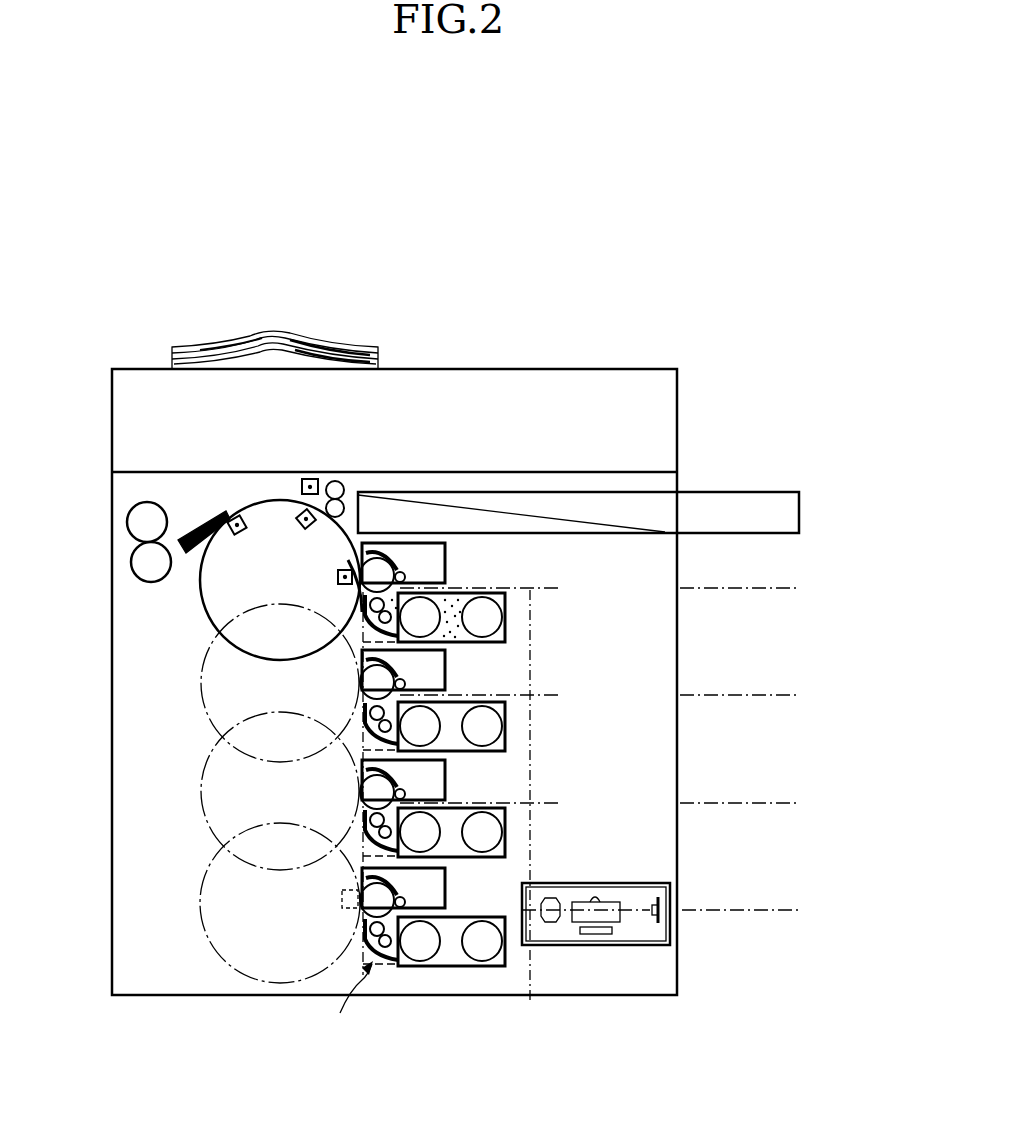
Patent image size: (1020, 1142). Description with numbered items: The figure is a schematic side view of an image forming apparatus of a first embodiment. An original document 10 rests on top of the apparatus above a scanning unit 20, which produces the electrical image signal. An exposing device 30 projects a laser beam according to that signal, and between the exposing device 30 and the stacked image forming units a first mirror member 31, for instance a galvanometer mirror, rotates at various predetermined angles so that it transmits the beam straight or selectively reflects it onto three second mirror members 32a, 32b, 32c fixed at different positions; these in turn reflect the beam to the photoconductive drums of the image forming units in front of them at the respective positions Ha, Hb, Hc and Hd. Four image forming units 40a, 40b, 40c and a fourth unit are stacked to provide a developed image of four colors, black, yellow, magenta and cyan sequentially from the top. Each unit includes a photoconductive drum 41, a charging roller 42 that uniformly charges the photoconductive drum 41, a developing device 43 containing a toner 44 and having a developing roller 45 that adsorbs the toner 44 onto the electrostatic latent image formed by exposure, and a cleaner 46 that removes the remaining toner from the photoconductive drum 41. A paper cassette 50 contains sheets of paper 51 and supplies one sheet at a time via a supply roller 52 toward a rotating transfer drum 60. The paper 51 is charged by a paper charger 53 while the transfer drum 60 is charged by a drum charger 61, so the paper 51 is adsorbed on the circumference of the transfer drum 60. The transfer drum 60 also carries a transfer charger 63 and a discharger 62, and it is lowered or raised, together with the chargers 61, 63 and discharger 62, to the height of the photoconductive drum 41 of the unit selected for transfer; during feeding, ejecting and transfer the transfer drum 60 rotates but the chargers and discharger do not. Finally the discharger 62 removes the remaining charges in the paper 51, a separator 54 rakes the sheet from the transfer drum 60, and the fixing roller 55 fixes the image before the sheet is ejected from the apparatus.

The original document 10 is at (322, 345).
The scanning unit 20 is at (680, 402).
The exposing device 30 is at (662, 950).
The first mirror member 31 is at (541, 684).
The second mirror member 32a is at (484, 559).
The second mirror member 32b is at (541, 688).
The second mirror member 32c is at (548, 795).
The image forming unit 40a is at (355, 649).
The image forming unit 40b is at (355, 751).
The image forming unit 40c is at (355, 856).
The photoconductive drum 41 is at (383, 558).
The charging roller 42 is at (402, 572).
The developing device 43 is at (505, 632).
The toner 44 is at (455, 627).
The developing roller 45 is at (357, 609).
The cleaner 46 is at (445, 562).
The paper cassette 50 is at (802, 503).
The paper 51 is at (508, 513).
The supply roller 52 is at (335, 481).
The paper charger 53 is at (308, 480).
The separator 54 is at (197, 522).
The fixing roller 55 is at (127, 521).
The transfer drum 60 is at (197, 606).
The drum charger 61 is at (298, 528).
The discharger 62 is at (237, 533).
The transfer charger 63 is at (337, 580).
The position Ha is at (617, 589).
The position Hb is at (618, 695).
The position Hc is at (617, 804).
The position Hd is at (681, 911).